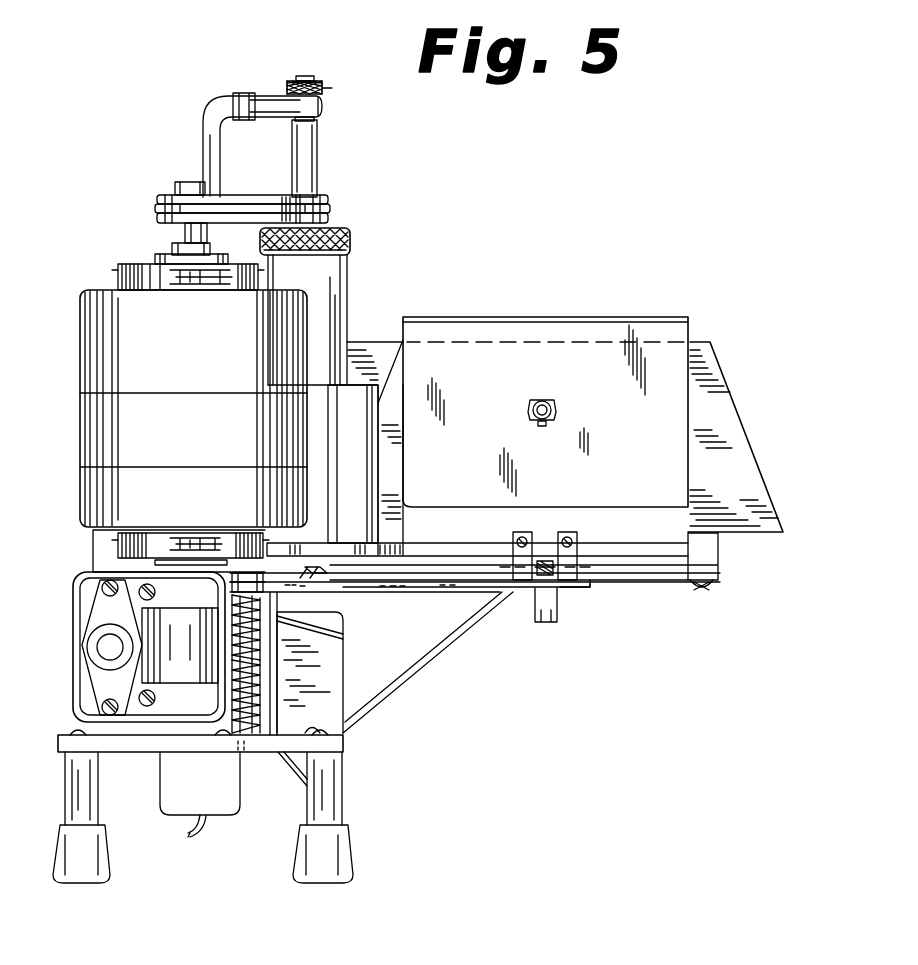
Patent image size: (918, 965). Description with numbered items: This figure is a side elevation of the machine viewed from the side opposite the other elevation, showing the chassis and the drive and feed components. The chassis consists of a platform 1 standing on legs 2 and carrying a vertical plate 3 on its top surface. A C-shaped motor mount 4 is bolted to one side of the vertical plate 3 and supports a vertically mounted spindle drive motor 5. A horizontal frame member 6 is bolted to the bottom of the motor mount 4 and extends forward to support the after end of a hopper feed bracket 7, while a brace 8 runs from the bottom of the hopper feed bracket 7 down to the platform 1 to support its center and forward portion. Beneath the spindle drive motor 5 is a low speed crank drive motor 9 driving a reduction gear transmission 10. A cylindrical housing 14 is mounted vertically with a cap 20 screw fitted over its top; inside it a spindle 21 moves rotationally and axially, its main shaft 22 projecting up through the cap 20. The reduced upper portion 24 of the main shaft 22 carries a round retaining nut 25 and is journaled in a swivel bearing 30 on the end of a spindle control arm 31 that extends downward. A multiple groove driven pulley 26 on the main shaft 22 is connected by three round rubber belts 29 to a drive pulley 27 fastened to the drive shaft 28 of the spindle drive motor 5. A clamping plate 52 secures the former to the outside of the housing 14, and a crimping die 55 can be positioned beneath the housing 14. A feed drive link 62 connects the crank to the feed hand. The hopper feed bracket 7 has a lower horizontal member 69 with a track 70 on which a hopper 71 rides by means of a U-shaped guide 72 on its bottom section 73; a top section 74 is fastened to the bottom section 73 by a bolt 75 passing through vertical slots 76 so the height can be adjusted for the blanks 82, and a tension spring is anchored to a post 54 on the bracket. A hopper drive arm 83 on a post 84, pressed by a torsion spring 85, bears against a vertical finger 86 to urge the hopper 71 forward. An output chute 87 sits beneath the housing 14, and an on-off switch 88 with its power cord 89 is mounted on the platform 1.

The platform 1 is at (333, 742).
The legs 2 is at (65, 787).
The vertical plate 3 is at (93, 552).
The C-shaped motor mount 4 is at (131, 262).
The spindle drive motor 5 is at (82, 318).
The horizontal frame member 6 is at (380, 594).
The hopper feed bracket 7 is at (726, 572).
The brace 8 is at (452, 642).
The low speed crank drive motor 9 is at (74, 643).
The reduction gear transmission 10 is at (272, 738).
The cylindrical housing 14 is at (348, 278).
The cap 20 is at (352, 242).
The spindle 21 is at (327, 141).
The main shaft 22 is at (318, 163).
The upper portion of the main shaft 24 is at (312, 82).
The round retaining nut 25 is at (324, 89).
The multiple groove driven pulley 26 is at (328, 188).
The multiple groove drive pulley 27 is at (170, 194).
The drive shaft 28 is at (185, 235).
The round rubber belts 29 is at (256, 196).
The swivel bearing 30 is at (272, 94).
The spindle control arm 31 is at (203, 130).
The clamping plate 52 is at (361, 447).
The post 54 is at (722, 548).
The crimping die 55 is at (322, 578).
The feed drive link 62 is at (325, 628).
The lower horizontal member 69 is at (646, 582).
The track 70 is at (543, 560).
The hopper 71 is at (507, 307).
The U-shaped guide 72 is at (578, 552).
The bottom section 73 is at (477, 583).
The top section 74 is at (595, 316).
The bolt 75 is at (553, 408).
The vertical slots 76 is at (545, 428).
The blanks 82 is at (368, 358).
The hopper drive arm 83 is at (592, 588).
The post 84 is at (258, 672).
The torsion spring 85 is at (258, 642).
The vertical finger 86 is at (545, 624).
The output chute 87 is at (292, 790).
The on-off switch 88 is at (160, 786).
The power cord 89 is at (186, 836).